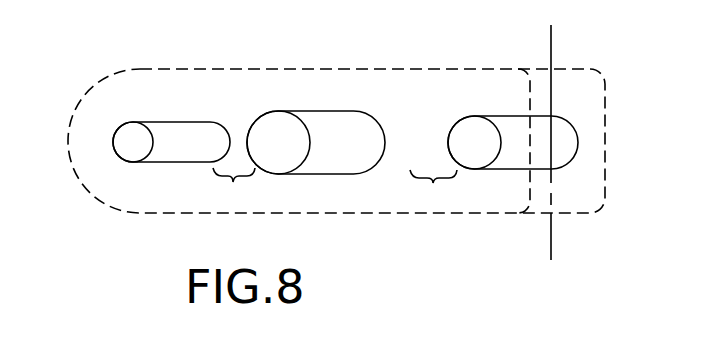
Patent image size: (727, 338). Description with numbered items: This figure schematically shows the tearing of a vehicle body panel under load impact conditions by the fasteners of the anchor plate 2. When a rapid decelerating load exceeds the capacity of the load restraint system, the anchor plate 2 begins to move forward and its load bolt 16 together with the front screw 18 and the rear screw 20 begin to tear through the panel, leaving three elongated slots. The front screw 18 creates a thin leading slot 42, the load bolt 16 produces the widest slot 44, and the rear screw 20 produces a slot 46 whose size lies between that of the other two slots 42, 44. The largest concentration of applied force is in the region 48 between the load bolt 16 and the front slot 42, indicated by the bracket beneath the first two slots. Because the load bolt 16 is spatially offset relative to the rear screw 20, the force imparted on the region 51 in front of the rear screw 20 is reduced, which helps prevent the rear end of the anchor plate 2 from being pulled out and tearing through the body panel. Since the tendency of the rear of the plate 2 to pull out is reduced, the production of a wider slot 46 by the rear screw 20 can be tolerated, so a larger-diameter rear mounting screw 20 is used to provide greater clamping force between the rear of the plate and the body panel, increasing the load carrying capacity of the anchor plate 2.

The anchor plate 2 is at (432, 67).
The load bolt 16 is at (270, 118).
The front screw 18 is at (133, 122).
The rear screw 20 is at (466, 124).
The leading slot 42 is at (162, 122).
The widest slot 44 is at (337, 112).
The slot 46 is at (509, 116).
The region 48 is at (235, 184).
The region 51 is at (434, 184).